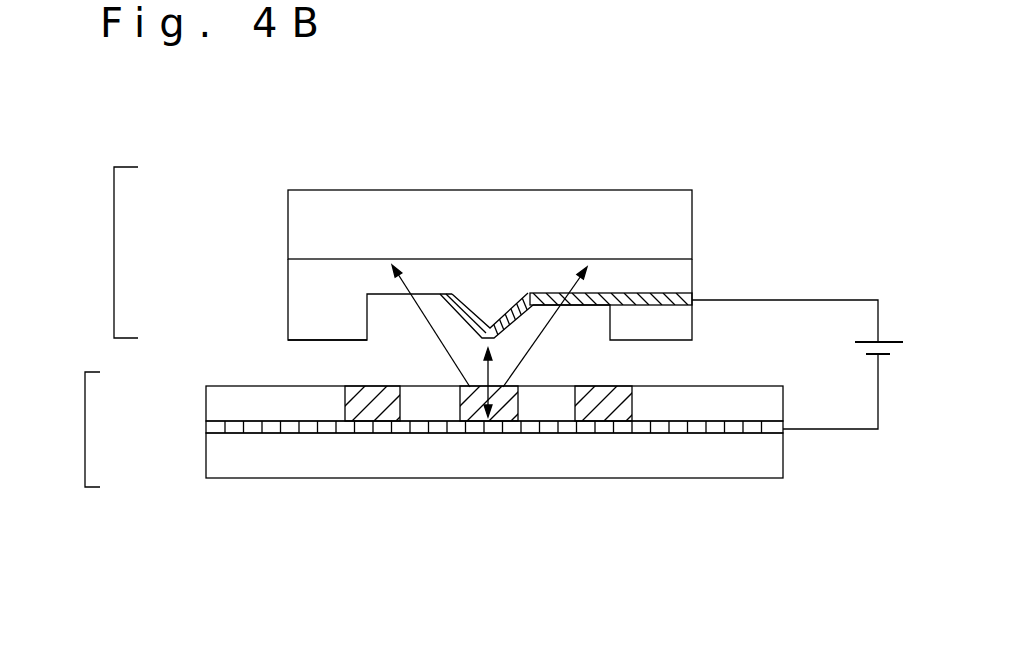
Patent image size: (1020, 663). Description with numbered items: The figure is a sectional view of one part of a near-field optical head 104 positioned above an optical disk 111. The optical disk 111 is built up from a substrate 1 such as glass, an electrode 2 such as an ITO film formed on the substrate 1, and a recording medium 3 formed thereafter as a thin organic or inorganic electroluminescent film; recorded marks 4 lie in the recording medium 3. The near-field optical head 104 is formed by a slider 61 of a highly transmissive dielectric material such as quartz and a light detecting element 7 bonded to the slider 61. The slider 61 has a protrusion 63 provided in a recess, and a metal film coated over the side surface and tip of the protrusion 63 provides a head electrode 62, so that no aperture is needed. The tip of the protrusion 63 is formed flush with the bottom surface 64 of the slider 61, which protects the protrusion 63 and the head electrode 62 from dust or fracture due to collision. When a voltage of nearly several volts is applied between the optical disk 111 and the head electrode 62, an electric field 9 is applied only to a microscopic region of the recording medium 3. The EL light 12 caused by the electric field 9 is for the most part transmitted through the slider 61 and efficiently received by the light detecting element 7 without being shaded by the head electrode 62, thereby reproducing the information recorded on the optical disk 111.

The substrate 1 is at (233, 466).
The electrode 2 is at (218, 428).
The recording medium 3 is at (223, 398).
The recorded mark 4 is at (345, 388).
The light detecting element 7 is at (299, 205).
The electric field 9 is at (495, 372).
The EL light 12 is at (489, 326).
The slider 61 is at (296, 303).
The head electrode 62 is at (658, 300).
The protrusion 63 is at (488, 316).
The bottom surface 64 is at (340, 338).
The near-field optical head 104 is at (101, 252).
The optical disk 111 is at (66, 429).